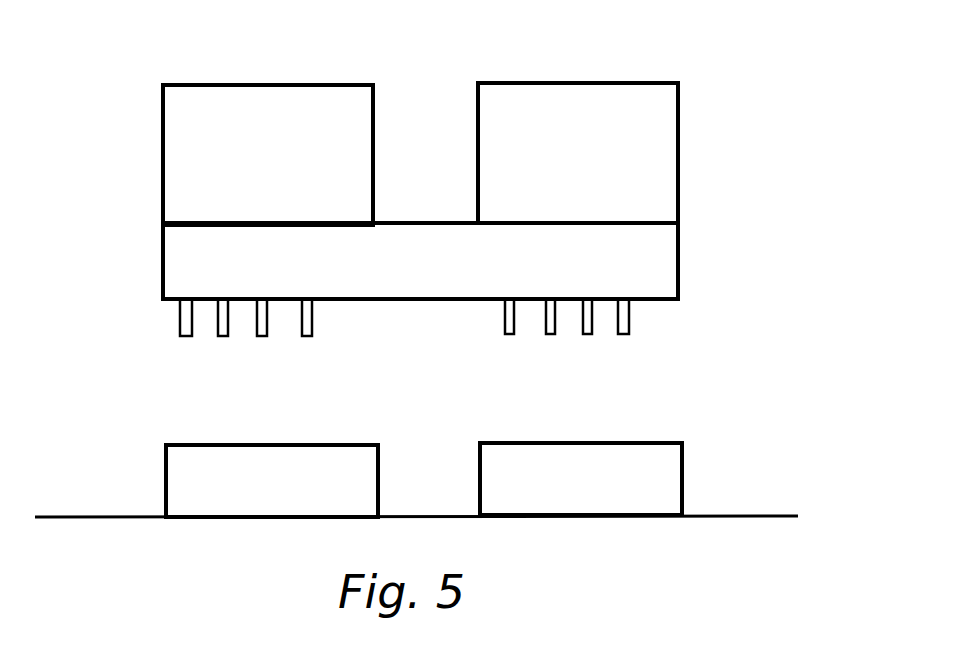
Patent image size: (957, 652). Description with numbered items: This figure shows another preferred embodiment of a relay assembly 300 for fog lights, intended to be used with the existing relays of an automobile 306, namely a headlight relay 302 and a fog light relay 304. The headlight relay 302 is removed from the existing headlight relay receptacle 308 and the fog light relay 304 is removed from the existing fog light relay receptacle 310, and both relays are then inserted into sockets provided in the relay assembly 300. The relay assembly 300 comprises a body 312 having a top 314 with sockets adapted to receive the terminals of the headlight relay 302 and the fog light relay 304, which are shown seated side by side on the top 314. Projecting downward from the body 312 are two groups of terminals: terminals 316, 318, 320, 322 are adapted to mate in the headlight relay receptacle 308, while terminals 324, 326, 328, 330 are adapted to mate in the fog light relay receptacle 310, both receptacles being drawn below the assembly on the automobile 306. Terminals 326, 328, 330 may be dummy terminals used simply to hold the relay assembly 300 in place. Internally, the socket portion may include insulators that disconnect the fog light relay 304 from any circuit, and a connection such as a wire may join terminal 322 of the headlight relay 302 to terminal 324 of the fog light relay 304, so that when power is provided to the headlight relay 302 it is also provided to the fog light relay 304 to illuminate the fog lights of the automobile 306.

The relay assembly 300 is at (714, 256).
The headlight relay 302 is at (163, 133).
The fog light relay 304 is at (678, 127).
The automobile 306 is at (775, 538).
The headlight relay receptacle 308 is at (166, 478).
The fog light relay receptacle 310 is at (682, 462).
The body 312 is at (195, 268).
The top 314 is at (430, 223).
The terminal 316 is at (180, 320).
The terminal 318 is at (222, 338).
The terminal 320 is at (260, 337).
The terminal 322 is at (305, 337).
The terminal 324 is at (505, 315).
The terminal 326 is at (550, 334).
The terminal 328 is at (587, 334).
The terminal 330 is at (623, 334).